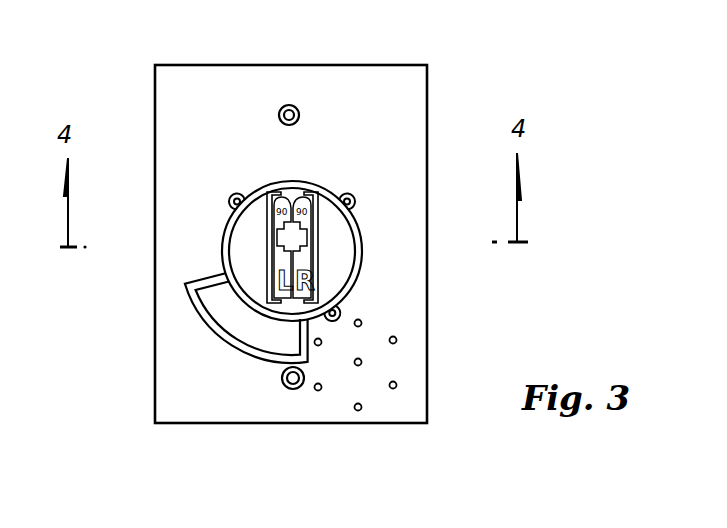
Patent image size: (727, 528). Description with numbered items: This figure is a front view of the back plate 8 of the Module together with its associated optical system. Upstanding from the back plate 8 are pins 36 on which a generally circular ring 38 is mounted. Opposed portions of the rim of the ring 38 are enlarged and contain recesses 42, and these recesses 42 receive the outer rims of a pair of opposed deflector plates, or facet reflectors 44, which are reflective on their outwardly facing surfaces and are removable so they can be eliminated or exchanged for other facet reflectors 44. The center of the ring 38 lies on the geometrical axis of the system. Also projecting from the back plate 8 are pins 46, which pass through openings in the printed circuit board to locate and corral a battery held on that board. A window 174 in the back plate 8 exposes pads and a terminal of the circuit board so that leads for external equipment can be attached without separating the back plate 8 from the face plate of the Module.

The back plate 8 is at (413, 63).
The pins 36 is at (340, 308).
The ring 38 is at (355, 262).
The recesses 42 is at (276, 193).
The facet reflectors 44 is at (316, 203).
The pins 46 is at (360, 410).
The window 174 is at (247, 339).